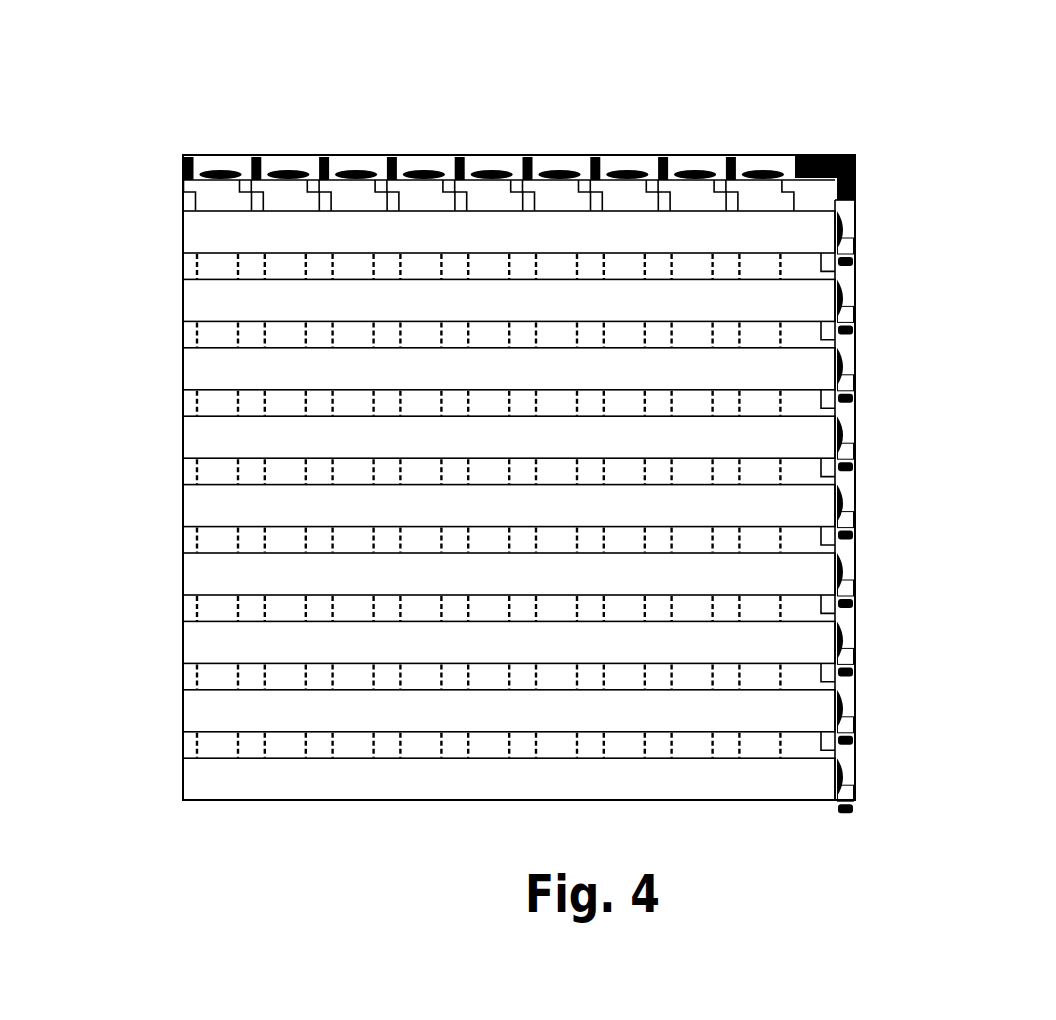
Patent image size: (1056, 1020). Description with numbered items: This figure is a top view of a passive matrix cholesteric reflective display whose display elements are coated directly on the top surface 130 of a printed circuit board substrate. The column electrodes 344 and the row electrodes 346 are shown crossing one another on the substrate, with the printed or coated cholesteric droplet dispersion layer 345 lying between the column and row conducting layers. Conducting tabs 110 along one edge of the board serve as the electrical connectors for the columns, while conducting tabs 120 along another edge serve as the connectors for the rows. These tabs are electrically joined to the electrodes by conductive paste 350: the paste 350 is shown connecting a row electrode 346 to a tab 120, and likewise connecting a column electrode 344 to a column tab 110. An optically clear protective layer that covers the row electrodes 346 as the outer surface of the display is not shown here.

The conducting tabs 110 is at (345, 157).
The conducting tabs 120 is at (847, 292).
The top surface 130 is at (818, 155).
The column electrodes 344 is at (369, 160).
The cholesteric droplet dispersion layer 345 is at (248, 265).
The row electrodes 346 is at (657, 292).
The conductive paste 350 is at (348, 265).